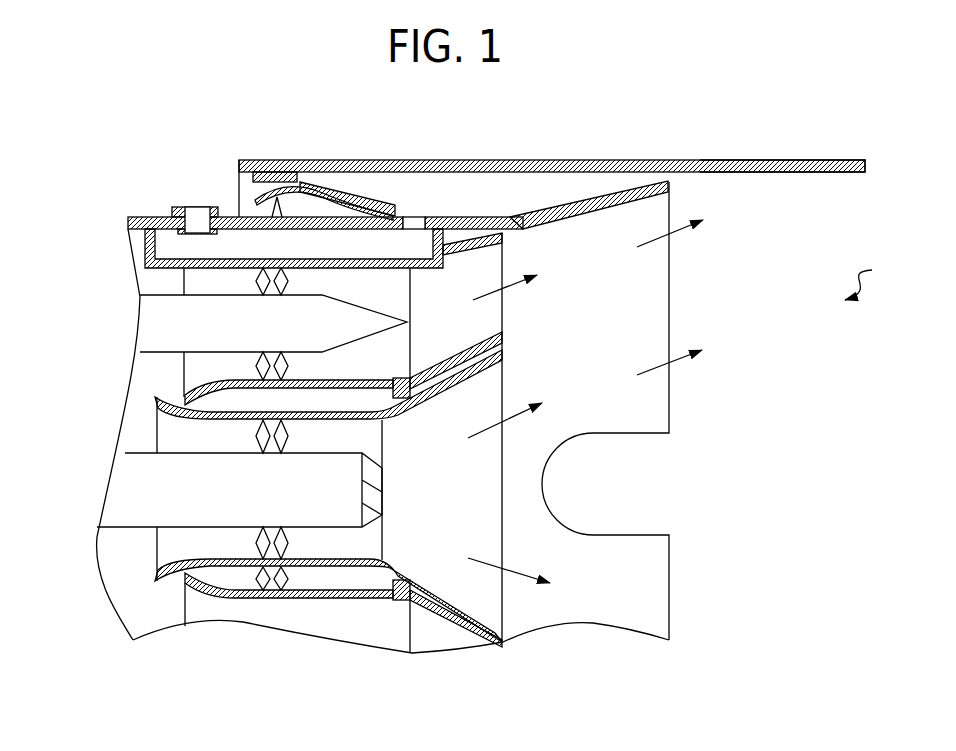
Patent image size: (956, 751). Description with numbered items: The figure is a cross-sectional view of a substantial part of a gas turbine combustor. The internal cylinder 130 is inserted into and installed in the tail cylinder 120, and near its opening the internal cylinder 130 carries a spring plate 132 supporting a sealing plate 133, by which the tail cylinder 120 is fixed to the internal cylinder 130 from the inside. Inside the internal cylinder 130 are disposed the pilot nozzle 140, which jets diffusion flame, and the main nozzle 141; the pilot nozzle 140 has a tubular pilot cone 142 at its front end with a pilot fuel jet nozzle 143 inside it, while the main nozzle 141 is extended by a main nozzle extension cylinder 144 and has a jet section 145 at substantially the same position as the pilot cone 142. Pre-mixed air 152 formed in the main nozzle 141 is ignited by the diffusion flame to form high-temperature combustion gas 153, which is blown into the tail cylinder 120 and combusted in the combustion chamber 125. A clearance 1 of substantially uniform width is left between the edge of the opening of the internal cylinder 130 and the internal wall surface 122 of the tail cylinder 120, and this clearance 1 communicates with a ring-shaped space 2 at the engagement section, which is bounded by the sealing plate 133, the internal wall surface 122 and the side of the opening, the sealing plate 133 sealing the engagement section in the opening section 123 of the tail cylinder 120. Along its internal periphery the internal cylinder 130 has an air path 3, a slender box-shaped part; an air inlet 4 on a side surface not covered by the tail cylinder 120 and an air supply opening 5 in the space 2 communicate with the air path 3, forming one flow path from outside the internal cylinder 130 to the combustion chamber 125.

The clearance 1 is at (660, 181).
The space 2 is at (473, 198).
The air path 3 is at (366, 248).
The air inlet 4 is at (195, 207).
The air supply opening 5 is at (414, 217).
The tail cylinder 120 is at (547, 160).
The internal wall surface 122 is at (753, 172).
The opening section 123 is at (670, 323).
The combustion chamber 125 is at (879, 275).
The internal cylinder 130 is at (150, 216).
The spring plate 132 is at (312, 195).
The sealing plate 133 is at (350, 213).
The pilot nozzle 140 is at (157, 430).
The main nozzle 141 is at (183, 382).
The pilot cone 142 is at (487, 248).
The pilot fuel jet nozzle 143 is at (137, 495).
The main nozzle extension cylinder 144 is at (455, 355).
The jet section 145 is at (157, 332).
The pre-mixed air 152 is at (512, 292).
The combustion gas 153 is at (677, 232).